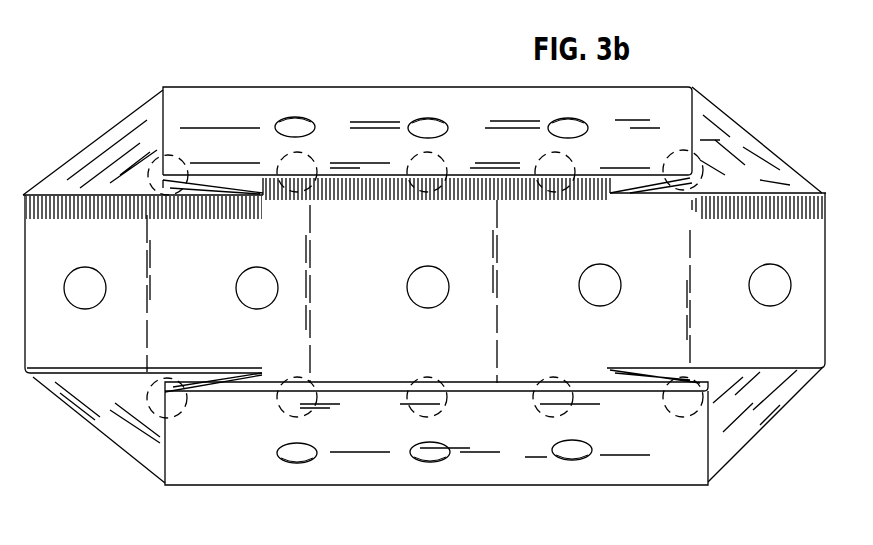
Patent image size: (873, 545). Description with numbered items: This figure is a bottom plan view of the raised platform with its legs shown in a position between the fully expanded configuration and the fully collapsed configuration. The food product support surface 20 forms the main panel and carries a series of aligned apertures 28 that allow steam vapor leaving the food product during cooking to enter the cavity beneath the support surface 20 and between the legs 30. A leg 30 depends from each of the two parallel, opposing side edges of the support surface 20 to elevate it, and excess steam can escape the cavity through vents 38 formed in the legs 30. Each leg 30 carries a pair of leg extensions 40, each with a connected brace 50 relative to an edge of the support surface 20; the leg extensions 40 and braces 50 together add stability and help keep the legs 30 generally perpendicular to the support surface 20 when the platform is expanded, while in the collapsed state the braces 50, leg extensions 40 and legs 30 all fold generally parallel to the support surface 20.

The food product support surface 20 is at (158, 342).
The aligned apertures 28 is at (263, 308).
The leg 30 is at (376, 388).
The vent 38 is at (313, 453).
The leg extension 40 is at (207, 190).
The brace 50 is at (112, 408).